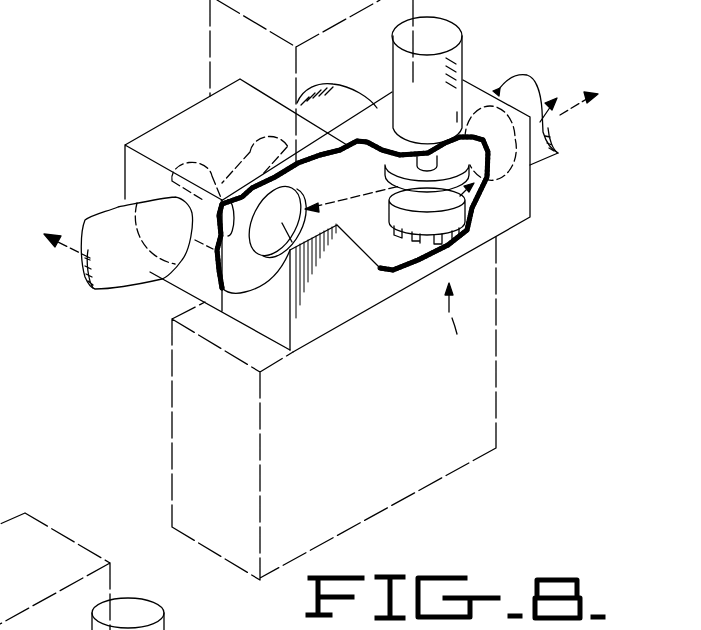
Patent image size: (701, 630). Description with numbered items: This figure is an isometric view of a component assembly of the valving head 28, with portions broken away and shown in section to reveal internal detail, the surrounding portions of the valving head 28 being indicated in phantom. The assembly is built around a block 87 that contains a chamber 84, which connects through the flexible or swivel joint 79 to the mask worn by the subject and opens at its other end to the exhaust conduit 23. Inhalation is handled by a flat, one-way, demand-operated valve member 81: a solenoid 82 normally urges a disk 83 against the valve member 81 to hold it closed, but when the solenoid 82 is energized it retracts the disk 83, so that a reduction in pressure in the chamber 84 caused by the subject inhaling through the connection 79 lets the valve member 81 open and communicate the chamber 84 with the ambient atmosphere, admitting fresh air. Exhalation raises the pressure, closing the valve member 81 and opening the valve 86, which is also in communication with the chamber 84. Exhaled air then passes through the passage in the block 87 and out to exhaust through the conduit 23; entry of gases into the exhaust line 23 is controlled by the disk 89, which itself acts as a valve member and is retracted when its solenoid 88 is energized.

The exhaust conduit 23 is at (122, 280).
The valving head 28 is at (500, 303).
The flexible or swivel joint 79 is at (523, 80).
The valve member 81 is at (418, 218).
The solenoid 82 is at (440, 113).
The disk 83 is at (385, 182).
The chamber 84 is at (380, 223).
The valve 86 is at (285, 226).
The block 87 is at (146, 134).
The solenoid 88 is at (328, 90).
The disk 89 is at (200, 167).